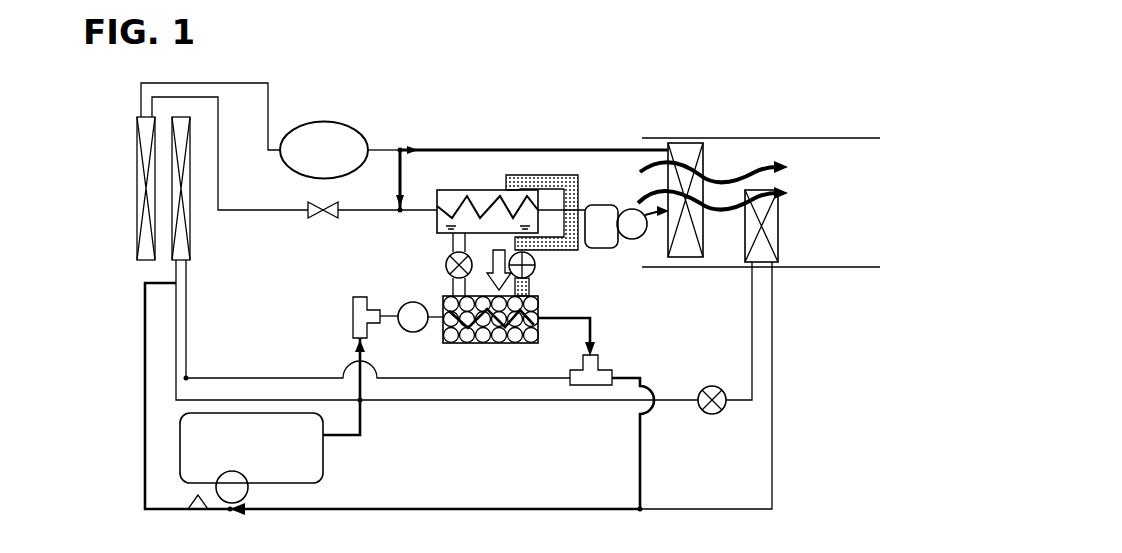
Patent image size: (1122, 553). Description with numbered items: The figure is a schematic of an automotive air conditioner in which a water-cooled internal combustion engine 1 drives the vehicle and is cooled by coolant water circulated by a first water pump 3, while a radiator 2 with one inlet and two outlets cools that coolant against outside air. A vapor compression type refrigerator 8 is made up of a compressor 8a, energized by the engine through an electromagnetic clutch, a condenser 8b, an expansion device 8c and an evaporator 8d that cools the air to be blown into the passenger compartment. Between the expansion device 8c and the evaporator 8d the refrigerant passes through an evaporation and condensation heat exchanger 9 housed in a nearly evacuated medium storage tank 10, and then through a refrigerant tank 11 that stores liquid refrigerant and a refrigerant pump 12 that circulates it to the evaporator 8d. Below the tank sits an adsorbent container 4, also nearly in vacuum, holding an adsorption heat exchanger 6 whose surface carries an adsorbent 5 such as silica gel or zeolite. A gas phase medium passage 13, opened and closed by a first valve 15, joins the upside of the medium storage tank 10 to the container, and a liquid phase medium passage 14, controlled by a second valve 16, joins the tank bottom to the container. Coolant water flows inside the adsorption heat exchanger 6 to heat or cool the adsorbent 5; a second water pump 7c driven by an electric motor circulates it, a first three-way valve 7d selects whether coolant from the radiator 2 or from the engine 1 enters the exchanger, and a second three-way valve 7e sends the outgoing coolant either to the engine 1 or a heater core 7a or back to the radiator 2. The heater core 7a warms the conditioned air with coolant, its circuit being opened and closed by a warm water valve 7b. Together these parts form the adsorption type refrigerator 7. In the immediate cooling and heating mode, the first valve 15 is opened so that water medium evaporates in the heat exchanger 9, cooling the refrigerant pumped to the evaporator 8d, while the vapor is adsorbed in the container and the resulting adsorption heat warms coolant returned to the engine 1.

The internal combustion engine 1 is at (323, 468).
The radiator 2 is at (172, 215).
The first water pump 3 is at (216, 492).
The adsorbent container 4 is at (540, 338).
The adsorbent 5 is at (515, 343).
The adsorption heat exchanger 6 is at (466, 343).
The adsorption type refrigerator 7 is at (642, 296).
The heater core 7a is at (778, 242).
The warm water valve 7b is at (712, 414).
The second water pump 7c is at (411, 332).
The first three-way valve 7d is at (353, 316).
The second three-way valve 7e is at (605, 372).
The vapor compression type refrigerator 8 is at (283, 109).
The compressor 8a is at (341, 122).
The condenser 8b is at (137, 155).
The expansion device 8c is at (338, 206).
The evaporator 8d is at (706, 152).
The evaporation and condensation heat exchanger 9 is at (488, 200).
The medium storage tank 10 is at (447, 190).
The refrigerant tank 11 is at (598, 205).
The refrigerant pump 12 is at (628, 208).
The gas phase medium passage 13 is at (572, 252).
The liquid phase medium passage 14 is at (453, 240).
The first valve 15 is at (534, 272).
The second valve 16 is at (446, 265).